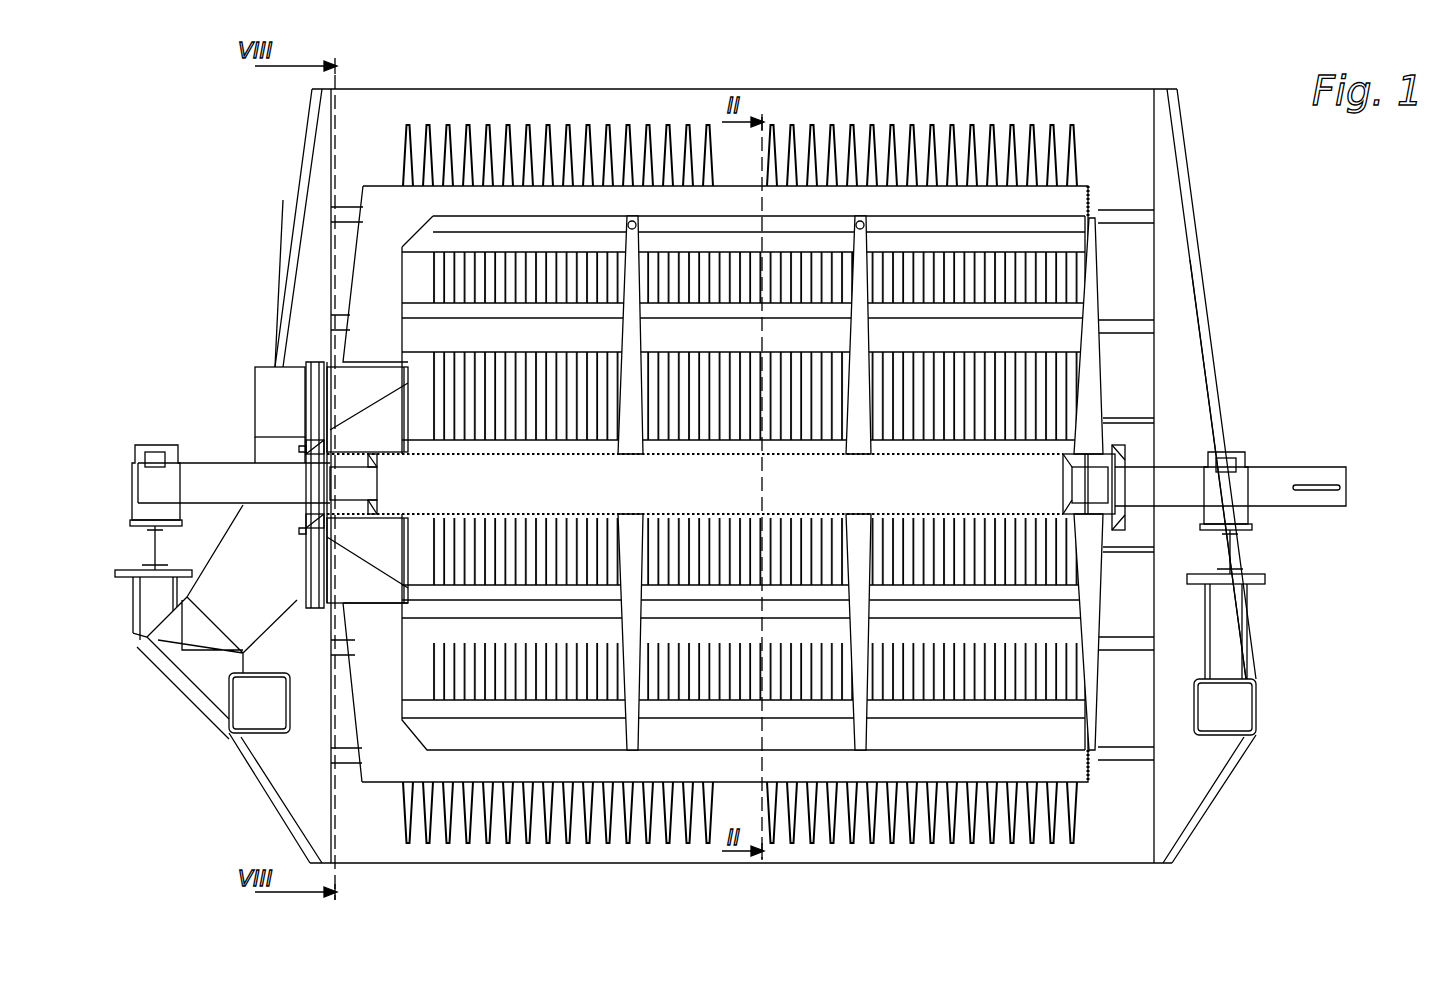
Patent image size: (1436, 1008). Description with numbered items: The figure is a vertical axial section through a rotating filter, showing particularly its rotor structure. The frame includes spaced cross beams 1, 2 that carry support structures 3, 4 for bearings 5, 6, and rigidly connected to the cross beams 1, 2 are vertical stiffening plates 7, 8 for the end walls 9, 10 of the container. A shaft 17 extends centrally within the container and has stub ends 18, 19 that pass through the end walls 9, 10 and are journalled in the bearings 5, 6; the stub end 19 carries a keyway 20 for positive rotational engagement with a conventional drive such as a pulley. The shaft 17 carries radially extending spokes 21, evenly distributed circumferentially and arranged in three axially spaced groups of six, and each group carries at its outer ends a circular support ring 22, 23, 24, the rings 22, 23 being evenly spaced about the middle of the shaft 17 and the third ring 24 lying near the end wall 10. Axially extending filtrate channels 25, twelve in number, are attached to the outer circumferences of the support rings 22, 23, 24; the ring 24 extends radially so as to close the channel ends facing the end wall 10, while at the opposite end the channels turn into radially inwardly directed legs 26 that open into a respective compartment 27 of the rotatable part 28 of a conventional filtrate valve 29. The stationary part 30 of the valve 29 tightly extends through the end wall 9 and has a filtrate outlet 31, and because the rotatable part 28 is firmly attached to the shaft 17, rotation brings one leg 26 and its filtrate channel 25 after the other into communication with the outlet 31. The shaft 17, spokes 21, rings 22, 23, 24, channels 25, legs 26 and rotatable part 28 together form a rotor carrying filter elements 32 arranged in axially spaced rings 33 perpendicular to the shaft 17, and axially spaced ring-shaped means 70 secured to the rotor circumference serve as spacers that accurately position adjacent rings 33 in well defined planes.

The cross beam 1 is at (290, 705).
The cross beam 2 is at (1193, 712).
The support structure 3 is at (133, 604).
The support structure 4 is at (1252, 603).
The bearing 5 is at (137, 448).
The bearing 6 is at (1223, 452).
The vertical stiffening plate 7 is at (313, 287).
The vertical stiffening plate 8 is at (1178, 278).
The end wall 9 is at (328, 138).
The end wall 10 is at (1157, 137).
The shaft 17 is at (611, 455).
The stub end 18 is at (226, 472).
The stub end 19 is at (1258, 470).
The keyway 20 is at (1348, 486).
The spokes 21 is at (636, 322).
The circular support ring 22 is at (641, 222).
The circular support ring 23 is at (866, 224).
The circular support ring 24 is at (1095, 200).
The filtrate channels 25 is at (520, 207).
The legs 26 is at (372, 243).
The compartment 27 is at (367, 485).
The rotatable part 28 is at (370, 436).
The filtrate valve 29 is at (246, 366).
The stationary part 30 is at (280, 400).
The filtrate outlet 31 is at (176, 677).
The filter elements 32 is at (553, 127).
The rings of filter elements 33 is at (774, 122).
The ring-shaped means 70 is at (686, 168).